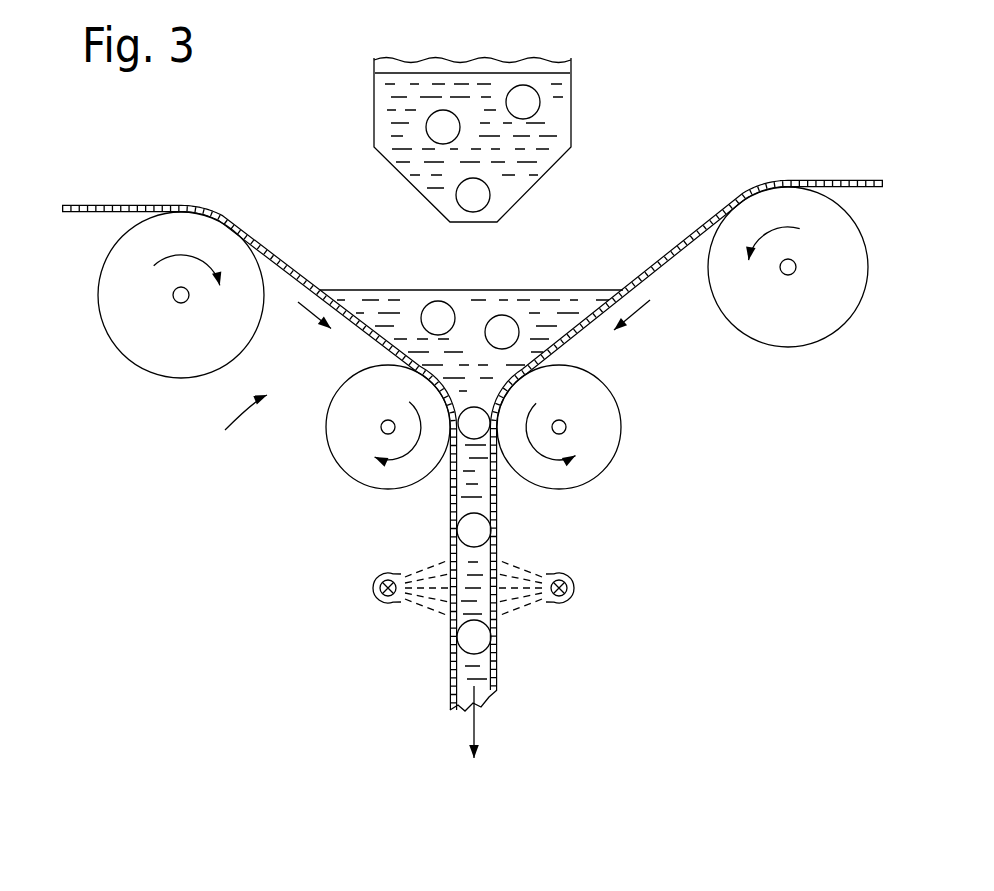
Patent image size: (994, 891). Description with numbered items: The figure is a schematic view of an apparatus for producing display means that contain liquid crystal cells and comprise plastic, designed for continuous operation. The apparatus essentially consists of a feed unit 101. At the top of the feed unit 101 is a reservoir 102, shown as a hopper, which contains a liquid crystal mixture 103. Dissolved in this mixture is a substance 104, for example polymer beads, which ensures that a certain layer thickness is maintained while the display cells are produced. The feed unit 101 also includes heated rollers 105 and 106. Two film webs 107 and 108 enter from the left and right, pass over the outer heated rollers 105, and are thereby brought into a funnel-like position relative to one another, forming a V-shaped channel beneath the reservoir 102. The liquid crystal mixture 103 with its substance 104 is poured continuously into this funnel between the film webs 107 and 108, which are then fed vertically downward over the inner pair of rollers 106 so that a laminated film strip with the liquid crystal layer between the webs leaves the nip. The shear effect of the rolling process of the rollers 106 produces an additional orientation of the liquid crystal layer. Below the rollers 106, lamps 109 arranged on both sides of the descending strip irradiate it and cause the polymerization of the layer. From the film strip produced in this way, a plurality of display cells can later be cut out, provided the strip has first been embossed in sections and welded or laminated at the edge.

The feed unit 101 is at (226, 430).
The reservoir 102 is at (552, 168).
The liquid crystal mixture 103 is at (558, 108).
The substance 104 is at (428, 130).
The heated rollers 105 is at (157, 363).
The heated rollers 106 is at (372, 484).
The film web 107 is at (273, 253).
The film web 108 is at (665, 262).
The lamps 109 is at (377, 594).